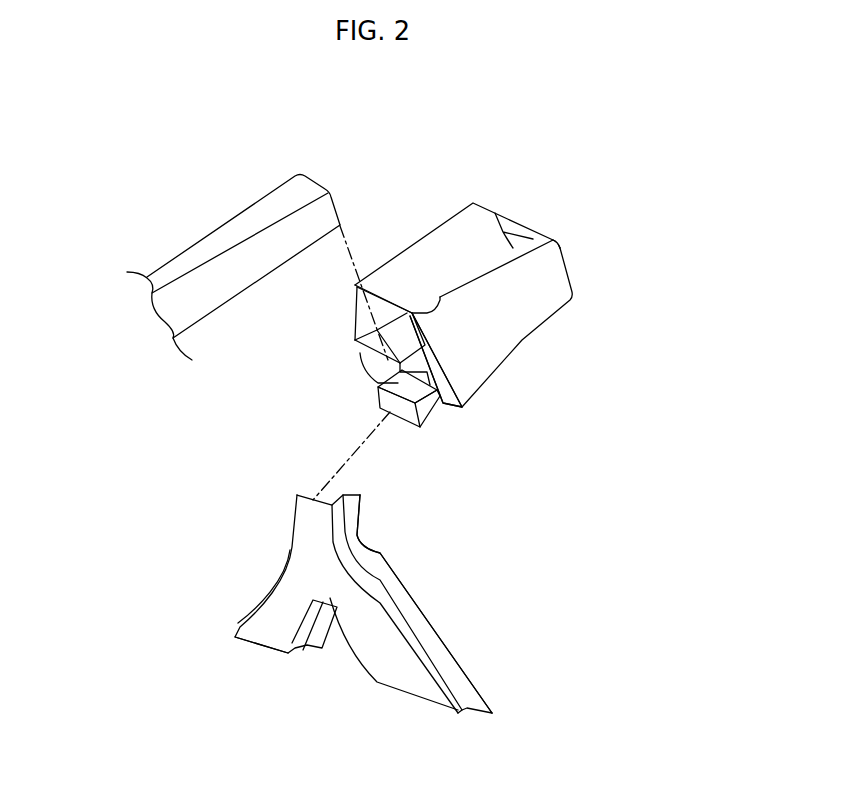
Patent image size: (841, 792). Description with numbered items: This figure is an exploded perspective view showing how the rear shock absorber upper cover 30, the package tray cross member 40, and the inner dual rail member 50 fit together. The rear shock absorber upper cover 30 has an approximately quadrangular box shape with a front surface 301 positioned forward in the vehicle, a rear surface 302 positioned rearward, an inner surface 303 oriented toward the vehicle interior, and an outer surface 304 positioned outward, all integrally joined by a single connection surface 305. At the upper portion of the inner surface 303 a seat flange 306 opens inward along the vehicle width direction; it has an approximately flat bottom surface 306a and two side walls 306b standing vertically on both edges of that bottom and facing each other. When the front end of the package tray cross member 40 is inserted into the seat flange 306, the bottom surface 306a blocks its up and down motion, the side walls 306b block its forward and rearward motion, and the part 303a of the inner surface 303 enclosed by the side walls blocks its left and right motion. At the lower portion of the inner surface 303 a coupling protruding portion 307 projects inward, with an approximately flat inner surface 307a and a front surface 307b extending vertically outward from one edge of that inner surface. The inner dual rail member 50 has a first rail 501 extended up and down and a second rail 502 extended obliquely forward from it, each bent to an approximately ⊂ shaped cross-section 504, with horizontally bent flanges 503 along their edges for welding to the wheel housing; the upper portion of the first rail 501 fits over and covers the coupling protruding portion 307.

The rear shock absorber upper cover 30 is at (424, 315).
The package tray cross member 40 is at (258, 205).
The inner dual rail member 50 is at (329, 601).
The front surface 301 is at (485, 340).
The rear surface 302 is at (437, 242).
The inner surface 303 is at (443, 405).
The part of the inner surface 303a is at (392, 313).
The outer surface 304 is at (542, 228).
The connection surface 305 is at (519, 230).
The seat flange 306 is at (400, 317).
The bottom surface 306a is at (363, 357).
The side walls 306b is at (357, 322).
The coupling protruding portion 307 is at (445, 454).
The inner surface of the coupling protruding portion 307a is at (408, 425).
The front surface of the coupling protruding portion 307b is at (437, 420).
The first rail 501 is at (265, 645).
The second rail 502 is at (410, 687).
The flanges 503 is at (240, 620).
The cross-section 504 is at (304, 492).